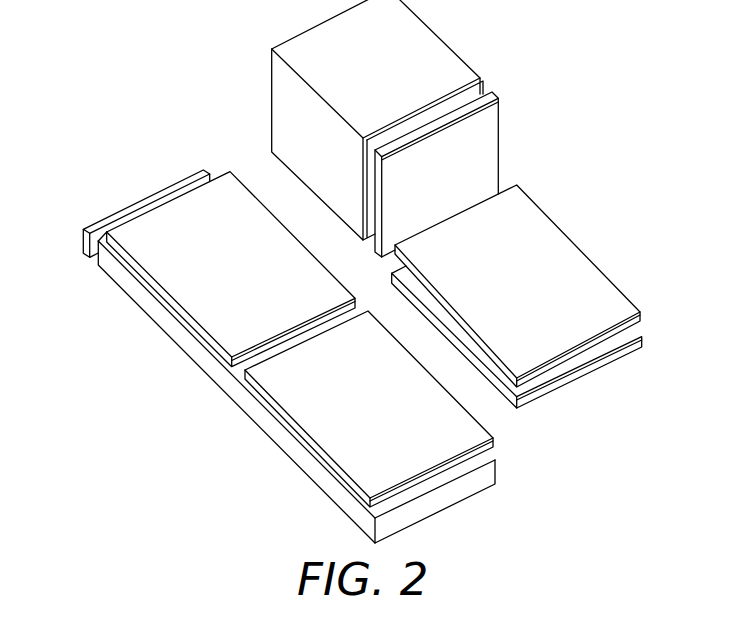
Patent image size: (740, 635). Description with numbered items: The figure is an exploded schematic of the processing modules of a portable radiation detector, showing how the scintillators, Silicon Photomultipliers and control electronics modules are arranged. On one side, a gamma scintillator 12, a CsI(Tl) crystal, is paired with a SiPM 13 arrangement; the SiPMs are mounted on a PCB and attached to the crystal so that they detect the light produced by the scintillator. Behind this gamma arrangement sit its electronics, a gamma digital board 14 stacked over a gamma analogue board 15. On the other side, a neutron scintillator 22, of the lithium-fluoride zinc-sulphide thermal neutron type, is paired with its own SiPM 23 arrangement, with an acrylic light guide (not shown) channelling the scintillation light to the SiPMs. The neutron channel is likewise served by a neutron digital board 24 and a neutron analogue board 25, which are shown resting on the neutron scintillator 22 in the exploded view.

The gamma scintillator 12 is at (390, 75).
The SiPM 13 is at (456, 186).
The gamma digital board 14 is at (534, 286).
The gamma analogue board 15 is at (587, 373).
The neutron scintillator 22 is at (440, 505).
The SiPM 23 is at (147, 200).
The neutron digital board 24 is at (382, 415).
The neutron analogue board 25 is at (242, 271).